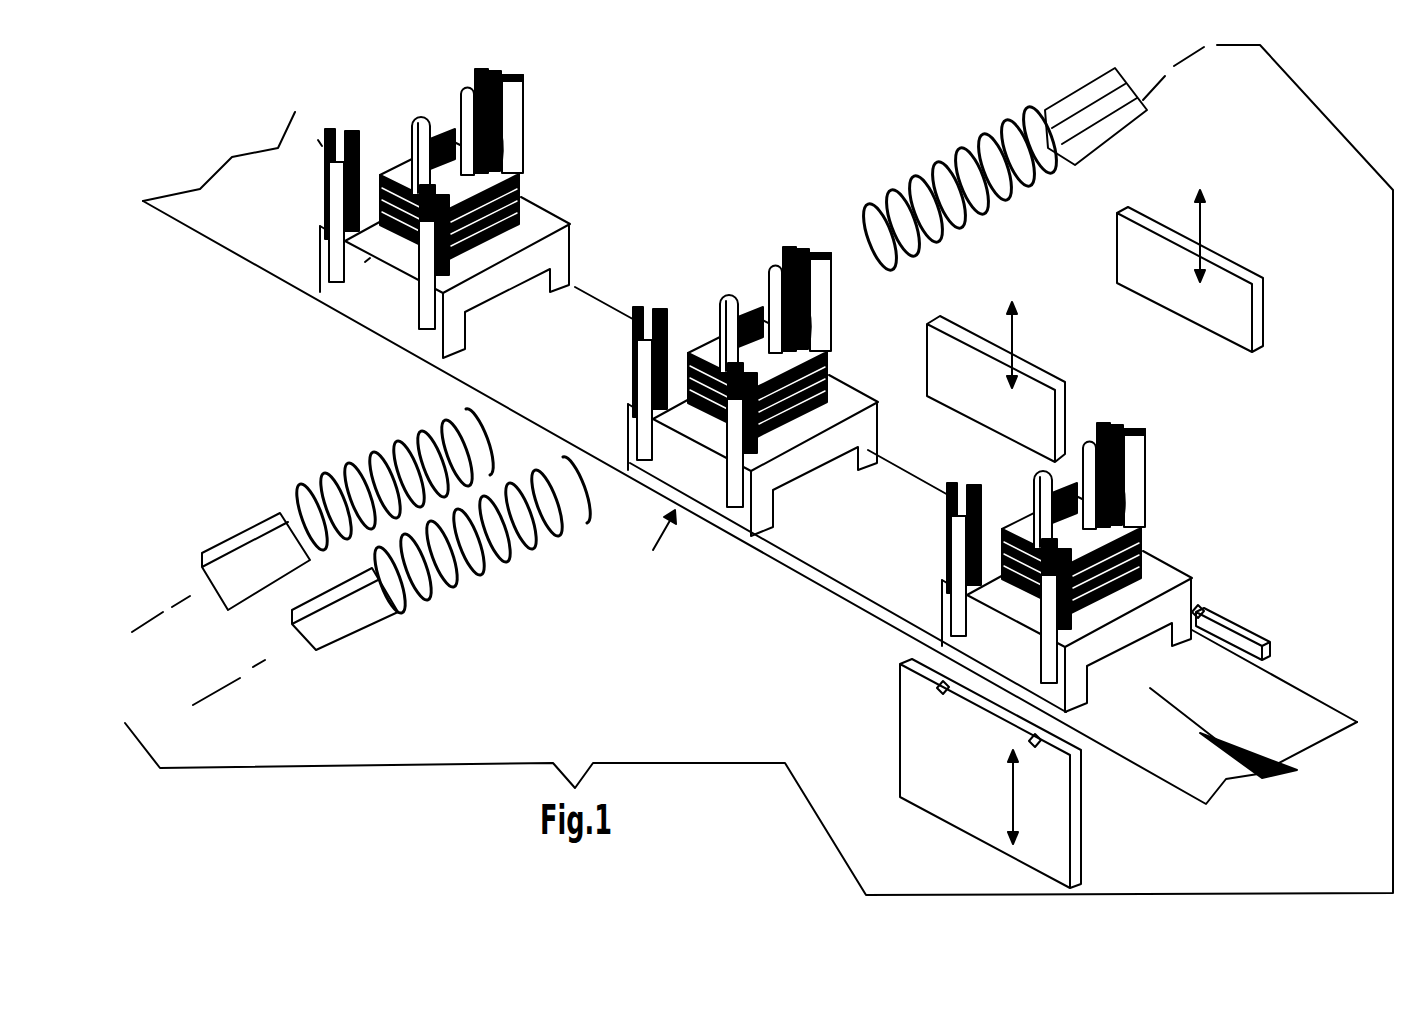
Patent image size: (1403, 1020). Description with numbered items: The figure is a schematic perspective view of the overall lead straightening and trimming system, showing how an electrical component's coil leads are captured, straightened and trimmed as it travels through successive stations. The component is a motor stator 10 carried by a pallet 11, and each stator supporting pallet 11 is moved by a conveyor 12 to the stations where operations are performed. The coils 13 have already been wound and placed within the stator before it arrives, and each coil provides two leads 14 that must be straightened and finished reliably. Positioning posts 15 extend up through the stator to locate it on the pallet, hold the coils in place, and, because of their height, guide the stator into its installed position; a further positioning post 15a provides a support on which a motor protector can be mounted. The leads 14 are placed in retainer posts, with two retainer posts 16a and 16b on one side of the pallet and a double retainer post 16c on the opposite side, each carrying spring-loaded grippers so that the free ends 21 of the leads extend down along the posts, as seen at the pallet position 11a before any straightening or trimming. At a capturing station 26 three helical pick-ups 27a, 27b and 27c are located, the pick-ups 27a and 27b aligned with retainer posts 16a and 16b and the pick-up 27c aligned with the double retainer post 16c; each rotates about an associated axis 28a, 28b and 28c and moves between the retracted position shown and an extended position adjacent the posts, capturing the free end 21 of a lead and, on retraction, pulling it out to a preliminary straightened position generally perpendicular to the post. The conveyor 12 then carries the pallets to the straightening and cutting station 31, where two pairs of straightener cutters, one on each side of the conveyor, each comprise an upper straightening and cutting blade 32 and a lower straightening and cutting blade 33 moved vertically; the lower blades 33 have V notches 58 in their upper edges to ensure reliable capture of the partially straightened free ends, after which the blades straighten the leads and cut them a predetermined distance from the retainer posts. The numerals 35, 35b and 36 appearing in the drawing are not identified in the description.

The motor stator 10 is at (512, 182).
The pallet 11 is at (868, 418).
The pallet position 11a is at (563, 243).
The conveyor 12 is at (608, 294).
The coils 13 is at (445, 142).
The leads 14 is at (380, 142).
The positioning posts 15 is at (418, 134).
The positioning post 15a is at (464, 100).
The retainer post 16a is at (345, 140).
The retainer post 16b is at (428, 330).
The double retainer post 16c is at (523, 78).
The free ends 21 is at (524, 118).
The capturing station 26 is at (655, 551).
The helical pick-up 27a is at (400, 437).
The helical pick-up 27b is at (490, 560).
The helical pick-up 27c is at (900, 190).
The axis 28a is at (150, 622).
The axis 28b is at (266, 665).
The axis 28c is at (1170, 78).
The straightening and cutting station 31 is at (884, 650).
The upper straightening and cutting blade 32 is at (1033, 370).
The lower straightening and cutting blade 33 is at (900, 750).
The contact tines 35 is at (350, 142).
The contact tine 35b is at (365, 262).
The spring sleeve 36 is at (235, 543).
The V notches 58 is at (944, 690).